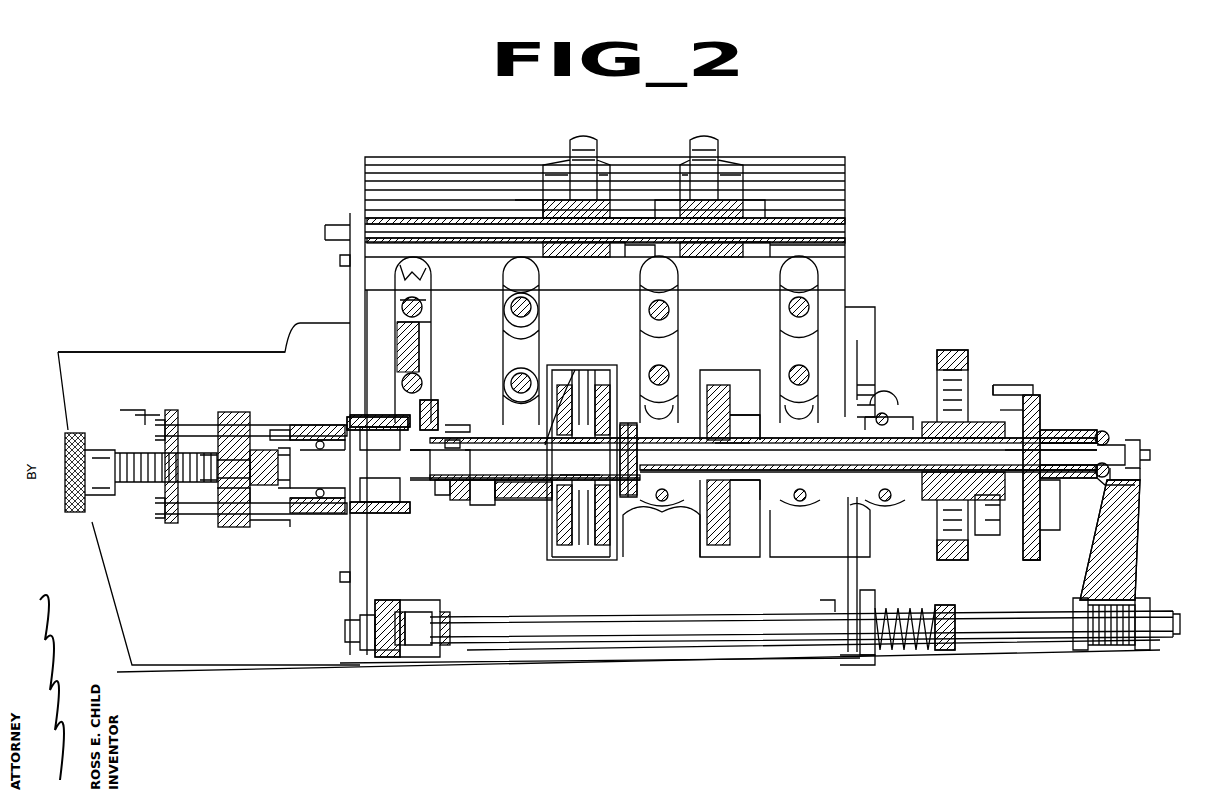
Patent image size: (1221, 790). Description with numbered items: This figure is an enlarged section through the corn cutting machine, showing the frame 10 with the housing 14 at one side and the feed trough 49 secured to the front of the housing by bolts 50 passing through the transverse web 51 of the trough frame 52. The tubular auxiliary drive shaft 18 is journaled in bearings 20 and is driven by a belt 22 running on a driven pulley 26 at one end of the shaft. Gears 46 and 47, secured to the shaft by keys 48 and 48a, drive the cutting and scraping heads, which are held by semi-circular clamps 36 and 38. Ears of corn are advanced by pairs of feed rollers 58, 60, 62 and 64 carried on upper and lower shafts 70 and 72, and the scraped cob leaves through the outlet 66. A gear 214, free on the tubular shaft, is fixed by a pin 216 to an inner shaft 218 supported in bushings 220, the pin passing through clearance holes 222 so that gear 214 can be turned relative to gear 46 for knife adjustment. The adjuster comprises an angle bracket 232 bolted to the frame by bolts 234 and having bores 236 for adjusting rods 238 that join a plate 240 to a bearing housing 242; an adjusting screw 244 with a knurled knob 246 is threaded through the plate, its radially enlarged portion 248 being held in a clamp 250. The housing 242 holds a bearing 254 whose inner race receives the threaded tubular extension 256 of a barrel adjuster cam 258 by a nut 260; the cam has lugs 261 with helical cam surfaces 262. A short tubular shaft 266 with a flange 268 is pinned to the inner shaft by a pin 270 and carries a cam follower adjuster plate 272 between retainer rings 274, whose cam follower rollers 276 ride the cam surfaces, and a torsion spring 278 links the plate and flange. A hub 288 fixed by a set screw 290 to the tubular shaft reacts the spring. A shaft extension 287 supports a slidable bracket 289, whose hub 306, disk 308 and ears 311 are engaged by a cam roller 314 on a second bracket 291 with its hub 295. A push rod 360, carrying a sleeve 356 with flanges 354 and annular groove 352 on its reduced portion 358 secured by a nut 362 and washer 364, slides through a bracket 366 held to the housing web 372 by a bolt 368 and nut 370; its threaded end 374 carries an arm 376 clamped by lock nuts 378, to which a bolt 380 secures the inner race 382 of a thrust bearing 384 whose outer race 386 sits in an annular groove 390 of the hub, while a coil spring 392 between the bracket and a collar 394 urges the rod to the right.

The frame 10 is at (700, 678).
The housing 14 is at (808, 158).
The auxiliary drive shaft 18 is at (700, 480).
The bearings 20 is at (878, 415).
The belt 22 is at (950, 350).
The driven pulley 26 is at (1028, 390).
The semi-circular clamp 36 is at (583, 150).
The semi-circular clamp 38 is at (735, 150).
The gear 46 is at (557, 545).
The gear 47 is at (707, 545).
The key 48 is at (583, 459).
The key 48a is at (715, 443).
The feed trough 49 is at (175, 348).
The bolts 50 is at (340, 260).
The transverse web 51 is at (350, 556).
The frame 52 is at (609, 497).
The feed rollers 58 is at (425, 295).
The feed rollers 60 is at (540, 278).
The feed rollers 62 is at (668, 352).
The feed rollers 64 is at (795, 320).
The outlet 66 is at (875, 312).
The upper shafts 70 is at (511, 305).
The lower shafts 72 is at (420, 378).
The gear 214 is at (600, 555).
The pin 216 is at (661, 532).
The shaft 218 is at (790, 500).
The bushings 220 is at (290, 410).
The clearance holes 222 is at (655, 460).
The angle bracket 232 is at (172, 415).
The bolts 234 is at (195, 430).
The bores 236 is at (222, 510).
The adjusting rods 238 is at (232, 415).
The plate 240 is at (160, 425).
The bearing housing 242 is at (315, 425).
The adjusting screw 244 is at (145, 482).
The knurled knob 246 is at (70, 440).
The radially enlarged portion 248 is at (250, 470).
The clamp 250 is at (245, 505).
The bearing 254 is at (330, 510).
The threaded tubular extension 256 is at (330, 455).
The barrel adjuster cam 258 is at (384, 490).
The nut 260 is at (280, 520).
The lugs 261 is at (375, 417).
The helical cam surfaces 262 is at (418, 513).
The tubular shaft 266 is at (415, 466).
The flange 268 is at (470, 500).
The pin 270 is at (472, 462).
The cam follower adjuster plate 272 is at (442, 495).
The retainer rings 274 is at (445, 450).
The cam follower rollers 276 is at (430, 430).
The torsion spring 278 is at (485, 505).
The shaft extension 287 is at (1062, 458).
The hub 288 is at (520, 500).
The bracket 289 is at (1045, 430).
The set screw 290 is at (571, 394).
The bracket 291 is at (1000, 406).
The hub 295 is at (1040, 459).
The hub 306 is at (1050, 480).
The disk 308 is at (1042, 528).
The ears 311 is at (1010, 385).
The cam roller 314 is at (995, 535).
The annular groove 352 is at (415, 655).
The flanges 354 is at (400, 660).
The sleeve 356 is at (375, 610).
The reduced portion 358 is at (395, 655).
The push rod 360 is at (625, 645).
The nut 362 is at (345, 628).
The washer 364 is at (350, 650).
The bracket 366 is at (860, 655).
The bolt 368 is at (870, 615).
The nut 370 is at (820, 603).
The web 372 is at (852, 553).
The threaded end 374 is at (1110, 650).
The arm 376 is at (1122, 560).
The lock nuts 378 is at (1080, 650).
The bolt 380 is at (1148, 455).
The inner race 382 is at (1125, 478).
The anti-friction thrust bearing 384 is at (1125, 487).
The outer race 386 is at (1105, 432).
The annular groove 390 is at (1112, 445).
The coil spring 392 is at (870, 658).
The collar 394 is at (942, 650).